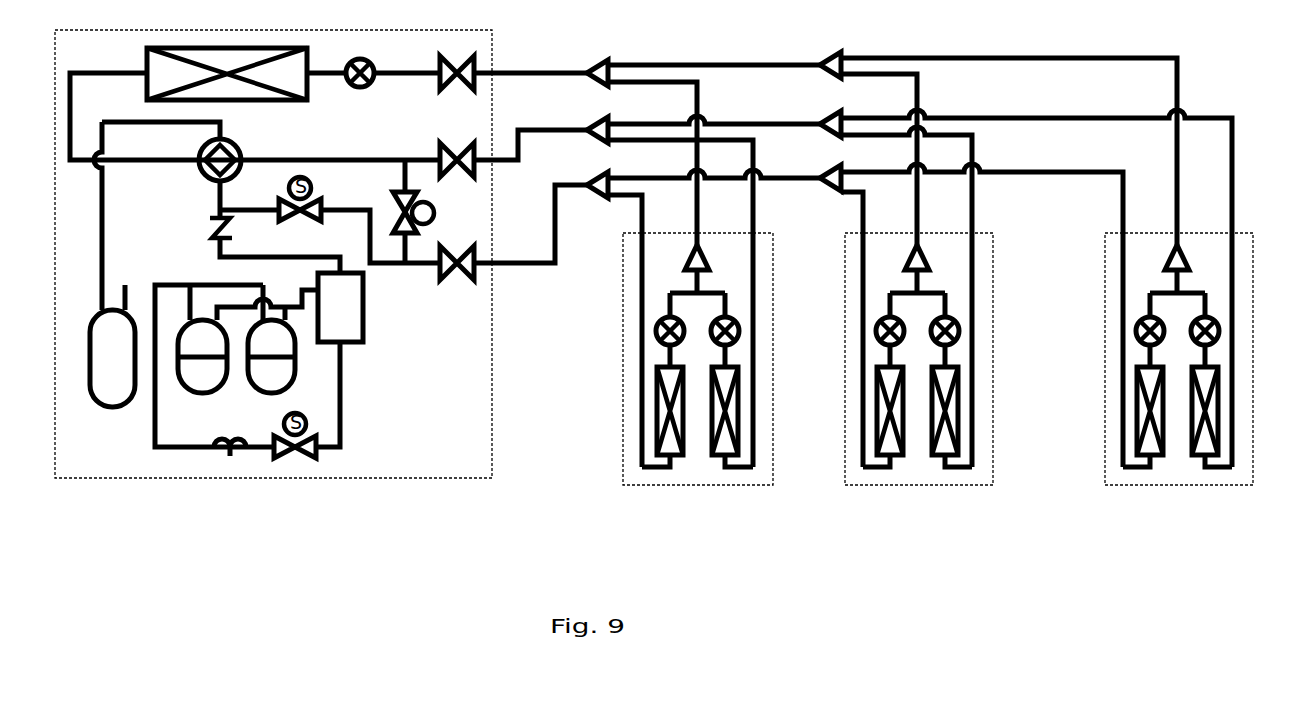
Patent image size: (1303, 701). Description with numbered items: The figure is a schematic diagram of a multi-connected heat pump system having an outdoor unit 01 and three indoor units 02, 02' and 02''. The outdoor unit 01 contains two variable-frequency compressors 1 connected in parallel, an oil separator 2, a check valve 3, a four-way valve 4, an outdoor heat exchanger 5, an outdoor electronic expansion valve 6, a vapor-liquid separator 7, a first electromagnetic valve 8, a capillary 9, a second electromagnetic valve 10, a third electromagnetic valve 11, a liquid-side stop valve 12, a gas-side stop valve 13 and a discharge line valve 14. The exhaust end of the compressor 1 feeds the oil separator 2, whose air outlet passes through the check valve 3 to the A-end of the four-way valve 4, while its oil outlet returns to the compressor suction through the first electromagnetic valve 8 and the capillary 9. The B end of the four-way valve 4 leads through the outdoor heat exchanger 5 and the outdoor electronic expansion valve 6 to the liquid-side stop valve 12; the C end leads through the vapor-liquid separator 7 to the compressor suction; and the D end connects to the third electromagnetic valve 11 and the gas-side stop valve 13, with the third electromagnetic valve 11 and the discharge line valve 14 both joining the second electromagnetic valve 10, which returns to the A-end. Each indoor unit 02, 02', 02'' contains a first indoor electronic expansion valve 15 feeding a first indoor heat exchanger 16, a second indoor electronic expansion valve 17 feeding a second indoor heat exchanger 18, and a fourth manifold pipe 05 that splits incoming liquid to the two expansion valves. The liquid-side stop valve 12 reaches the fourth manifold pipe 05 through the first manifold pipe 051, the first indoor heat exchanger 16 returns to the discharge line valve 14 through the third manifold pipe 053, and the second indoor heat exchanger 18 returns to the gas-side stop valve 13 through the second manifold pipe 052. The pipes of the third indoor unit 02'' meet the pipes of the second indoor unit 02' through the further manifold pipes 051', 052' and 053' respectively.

The outdoor unit 01 is at (410, 478).
The compressor 1 is at (205, 393).
The oil separator 2 is at (333, 322).
The check valve 3 is at (212, 238).
The four-way valve 4 is at (203, 166).
The outdoor heat exchanger 5 is at (262, 104).
The outdoor electronic expansion valve 6 is at (364, 88).
The vapor-liquid separator 7 is at (110, 408).
The first electromagnetic valve 8 is at (308, 460).
The capillary 9 is at (222, 452).
The second electromagnetic valve 10 is at (290, 226).
The third electromagnetic valve 11 is at (413, 190).
The liquid-side stop valve 12 is at (446, 84).
The gas-side stop valve 13 is at (478, 144).
The discharge line valve 14 is at (455, 277).
The first indoor unit 02 is at (672, 359).
The second indoor unit 02' is at (892, 359).
The third indoor unit 02'' is at (1151, 359).
The fourth manifold pipe 05 is at (704, 258).
The first manifold pipe 051 is at (578, 61).
The second manifold pipe 052 is at (578, 119).
The third manifold pipe 053 is at (578, 174).
The manifold pipe 051' is at (813, 57).
The manifold pipe 052' is at (813, 116).
The manifold pipe 053' is at (813, 170).
The first indoor electronic expansion valve 15 is at (657, 328).
The first indoor heat exchanger 16 is at (658, 385).
The second indoor electronic expansion valve 17 is at (736, 318).
The second indoor heat exchanger 18 is at (745, 390).